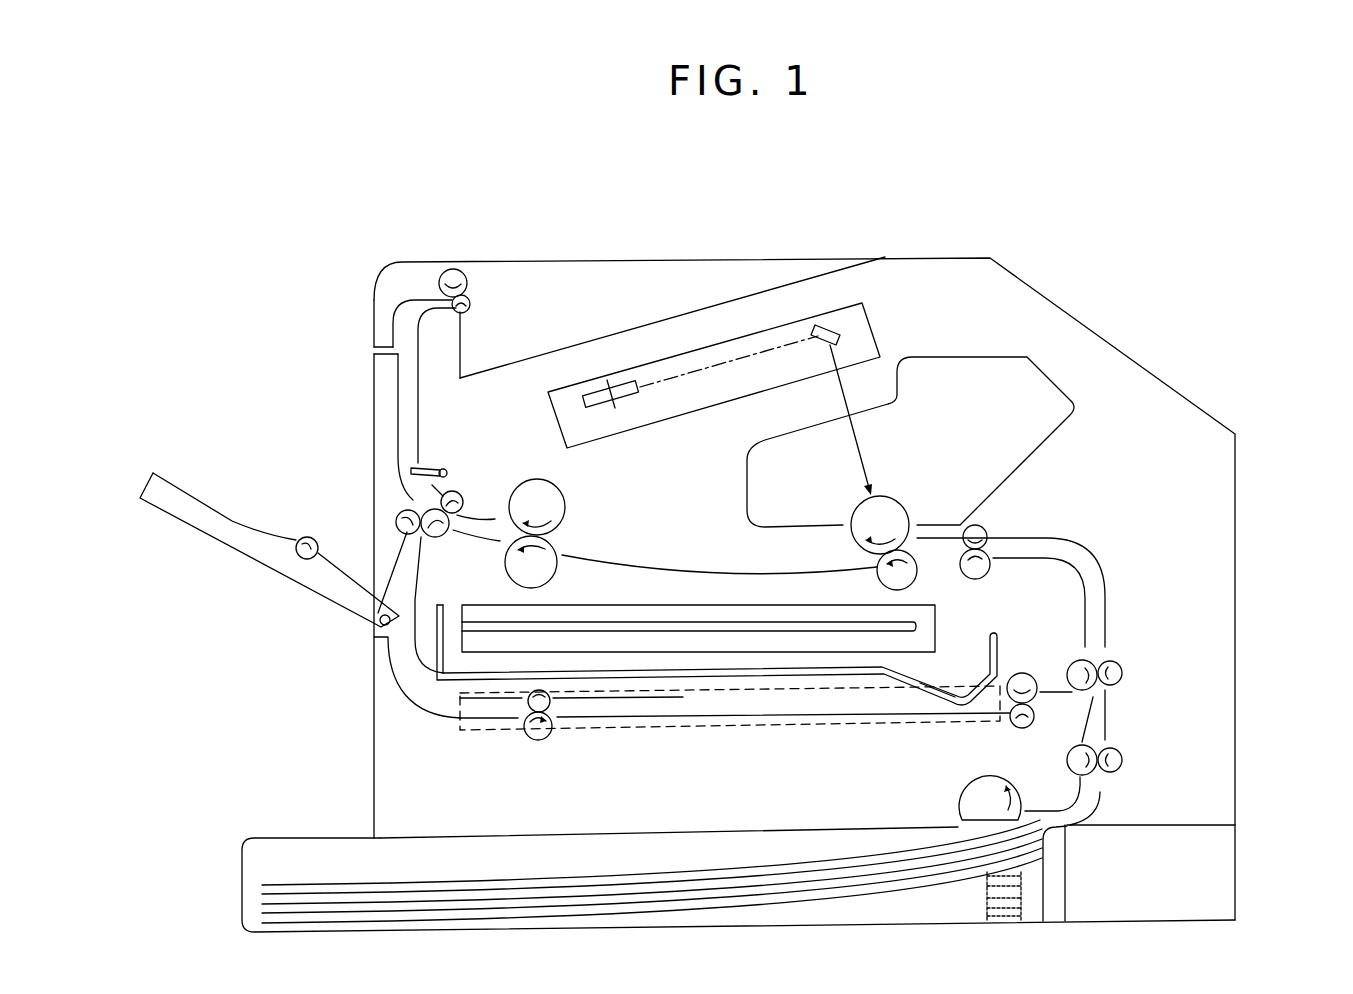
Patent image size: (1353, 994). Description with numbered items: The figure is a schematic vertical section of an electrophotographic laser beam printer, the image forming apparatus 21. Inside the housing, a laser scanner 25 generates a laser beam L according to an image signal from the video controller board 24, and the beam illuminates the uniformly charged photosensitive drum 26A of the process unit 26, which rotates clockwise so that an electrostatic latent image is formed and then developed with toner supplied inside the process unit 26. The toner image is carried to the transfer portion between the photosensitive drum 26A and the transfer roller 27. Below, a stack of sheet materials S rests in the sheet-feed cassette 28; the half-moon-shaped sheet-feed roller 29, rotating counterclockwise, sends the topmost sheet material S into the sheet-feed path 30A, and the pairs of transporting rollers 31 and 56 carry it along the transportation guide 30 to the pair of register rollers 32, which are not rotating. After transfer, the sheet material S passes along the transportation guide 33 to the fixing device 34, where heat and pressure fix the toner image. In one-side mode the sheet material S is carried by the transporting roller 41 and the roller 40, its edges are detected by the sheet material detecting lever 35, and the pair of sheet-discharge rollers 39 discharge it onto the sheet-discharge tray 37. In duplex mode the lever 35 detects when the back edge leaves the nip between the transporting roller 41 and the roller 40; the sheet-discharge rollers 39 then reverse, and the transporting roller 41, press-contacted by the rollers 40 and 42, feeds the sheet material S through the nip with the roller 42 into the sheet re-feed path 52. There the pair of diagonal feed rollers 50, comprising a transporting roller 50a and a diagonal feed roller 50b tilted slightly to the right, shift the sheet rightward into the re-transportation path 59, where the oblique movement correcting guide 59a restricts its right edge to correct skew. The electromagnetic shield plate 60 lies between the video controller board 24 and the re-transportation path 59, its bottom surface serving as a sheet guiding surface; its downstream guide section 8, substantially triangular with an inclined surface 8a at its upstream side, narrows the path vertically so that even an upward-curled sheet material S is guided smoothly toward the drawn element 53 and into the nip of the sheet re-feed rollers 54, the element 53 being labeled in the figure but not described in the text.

The image forming apparatus 21 is at (848, 254).
The video controller board 24 is at (604, 620).
The laser scanner 25 is at (753, 345).
The process unit 26 is at (935, 365).
The photosensitive drum 26A is at (897, 503).
The transfer roller 27 is at (877, 562).
The sheet-feed cassette 28 is at (1243, 858).
The sheet-feed roller 29 is at (958, 810).
The transportation guide 30 is at (1055, 536).
The sheet-feed path 30A is at (1067, 808).
The transporting rollers 31 is at (1120, 782).
The register rollers 32 is at (990, 571).
The transportation guide 33 is at (685, 568).
The fixing device 34 is at (566, 492).
The sheet material detecting lever 35 is at (437, 467).
The sheet-discharge tray 37 is at (565, 352).
The sheet-discharge rollers 39 is at (455, 268).
The roller 40 is at (458, 492).
The transporting roller 41 is at (415, 503).
The roller 42 is at (397, 525).
The pair of diagonal feed rollers 50 is at (554, 749).
The transporting roller 50a is at (532, 737).
The diagonal feed roller 50b is at (552, 703).
The sheet re-feed path 52 is at (482, 722).
The re-feed roller 53 is at (940, 710).
The sheet re-feed rollers 54 is at (1047, 695).
The transporting rollers 56 is at (1122, 668).
The re-transportation path 59 is at (635, 714).
The oblique movement correcting guide 59a is at (683, 727).
The electromagnetic shield plate 60 is at (783, 682).
The guide section 8 is at (908, 690).
The inclined surface 8a is at (930, 697).
The laser beam L is at (857, 396).
The sheet material S is at (790, 870).